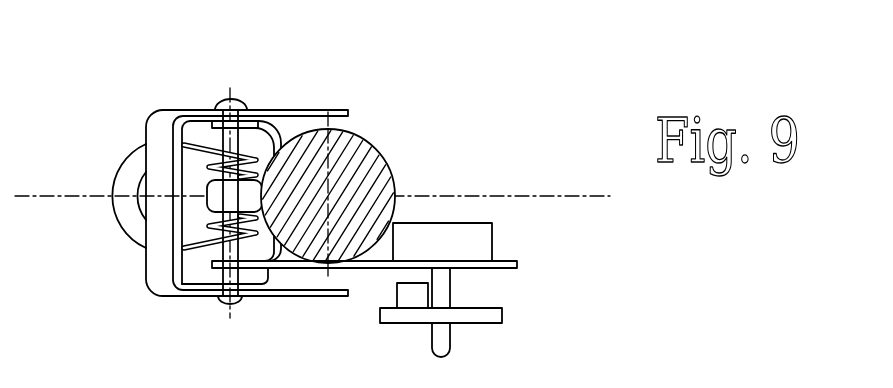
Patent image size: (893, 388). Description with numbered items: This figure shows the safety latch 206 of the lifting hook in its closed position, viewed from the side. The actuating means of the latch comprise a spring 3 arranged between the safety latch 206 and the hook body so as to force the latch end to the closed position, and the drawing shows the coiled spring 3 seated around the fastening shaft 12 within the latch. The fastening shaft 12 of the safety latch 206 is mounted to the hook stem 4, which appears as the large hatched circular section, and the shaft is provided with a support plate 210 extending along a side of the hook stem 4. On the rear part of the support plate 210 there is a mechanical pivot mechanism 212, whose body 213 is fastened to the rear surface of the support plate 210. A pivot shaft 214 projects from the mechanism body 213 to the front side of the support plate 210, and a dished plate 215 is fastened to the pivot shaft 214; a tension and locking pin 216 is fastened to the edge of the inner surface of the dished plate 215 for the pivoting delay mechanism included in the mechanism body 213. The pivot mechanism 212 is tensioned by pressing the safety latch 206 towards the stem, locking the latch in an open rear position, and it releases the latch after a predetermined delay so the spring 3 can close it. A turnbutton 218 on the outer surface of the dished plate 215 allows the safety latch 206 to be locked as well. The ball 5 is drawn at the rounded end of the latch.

The spring 3 is at (197, 139).
The hook stem 4 is at (383, 150).
The ball 5 is at (88, 177).
The fastening shaft 12 is at (220, 303).
The safety latch 206 is at (137, 277).
The support plate 210 is at (258, 267).
The mechanical pivot mechanism 212 is at (459, 263).
The mechanism body 213 is at (493, 240).
The pivot shaft 214 is at (452, 285).
The dished plate 215 is at (503, 315).
The tension and locking pin 216 is at (396, 297).
The turnbutton 218 is at (430, 339).